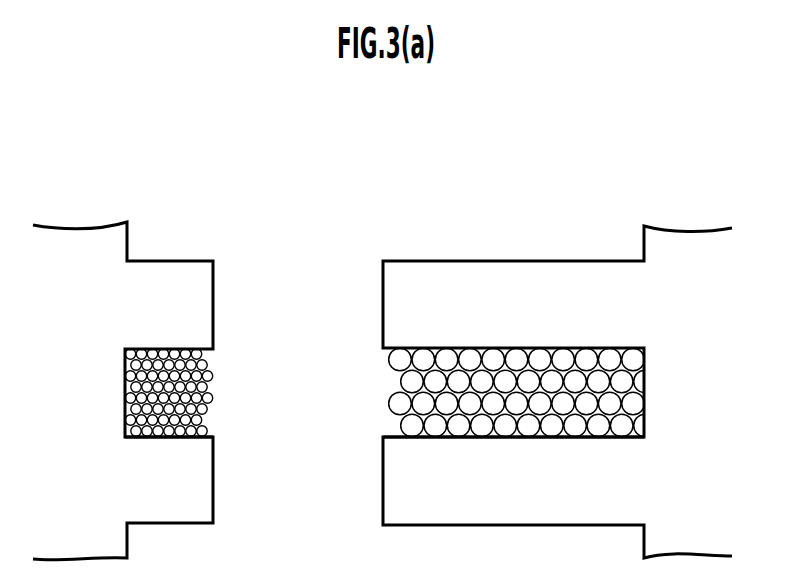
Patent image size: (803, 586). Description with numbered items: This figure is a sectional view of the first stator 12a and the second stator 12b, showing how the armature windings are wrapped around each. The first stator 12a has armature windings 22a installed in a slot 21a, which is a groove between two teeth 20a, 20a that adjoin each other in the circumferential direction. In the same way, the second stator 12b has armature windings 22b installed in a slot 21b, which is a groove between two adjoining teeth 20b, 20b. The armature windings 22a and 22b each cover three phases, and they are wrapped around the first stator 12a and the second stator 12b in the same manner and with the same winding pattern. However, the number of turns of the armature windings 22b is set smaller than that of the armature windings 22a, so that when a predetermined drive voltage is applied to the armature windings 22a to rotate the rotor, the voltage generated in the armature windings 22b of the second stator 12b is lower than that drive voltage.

The first stator 12a is at (512, 346).
The second stator 12b is at (160, 334).
The teeth 20a is at (383, 268).
The teeth 20b is at (193, 286).
The slot 21a is at (392, 430).
The slot 21b is at (202, 432).
The armature windings 22a is at (398, 382).
The armature windings 22b is at (210, 382).